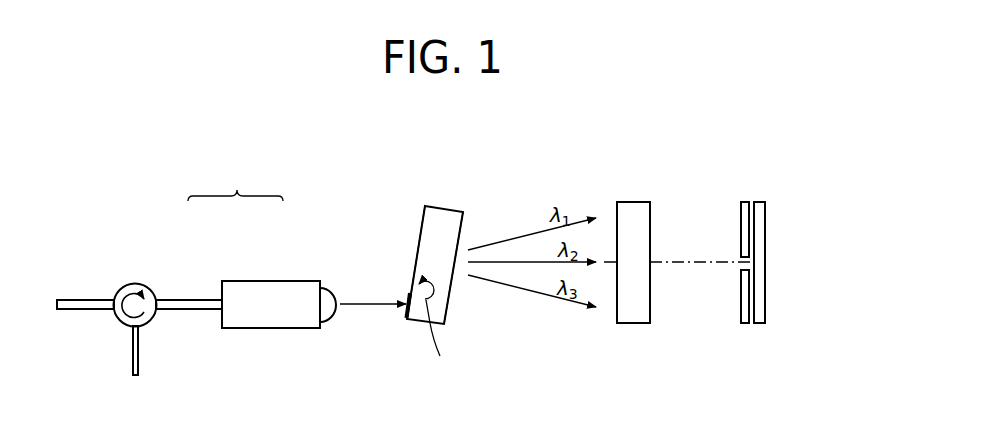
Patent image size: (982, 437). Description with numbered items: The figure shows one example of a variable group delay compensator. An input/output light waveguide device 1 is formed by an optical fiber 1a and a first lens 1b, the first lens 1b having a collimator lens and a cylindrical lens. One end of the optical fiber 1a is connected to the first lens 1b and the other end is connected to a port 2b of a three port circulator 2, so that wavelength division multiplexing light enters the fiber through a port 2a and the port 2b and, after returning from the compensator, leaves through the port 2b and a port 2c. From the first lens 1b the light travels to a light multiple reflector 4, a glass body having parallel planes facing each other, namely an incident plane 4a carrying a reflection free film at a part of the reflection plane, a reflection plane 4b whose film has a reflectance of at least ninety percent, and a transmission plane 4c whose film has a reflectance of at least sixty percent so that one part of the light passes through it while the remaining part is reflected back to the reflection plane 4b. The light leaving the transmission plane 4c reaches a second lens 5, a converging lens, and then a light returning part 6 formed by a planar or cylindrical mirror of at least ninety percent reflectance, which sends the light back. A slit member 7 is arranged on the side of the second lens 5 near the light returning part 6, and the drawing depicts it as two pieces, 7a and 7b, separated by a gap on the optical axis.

The input/output light waveguide device 1 is at (246, 247).
The optical fiber 1a is at (205, 300).
The first lens 1b is at (265, 281).
The three port circulator 2 is at (139, 316).
The port 2a is at (118, 288).
The port 2b is at (165, 300).
The port 2c is at (132, 349).
The light multiple reflector 4 is at (429, 268).
The incident plane 4a is at (408, 321).
The reflection plane 4b is at (420, 243).
The transmission plane 4c is at (449, 297).
The second lens 5 is at (635, 202).
The light returning part 6 is at (758, 324).
The slit member 7 is at (778, 240).
The upper slit member 7a is at (748, 250).
The lower slit member 7b is at (748, 280).